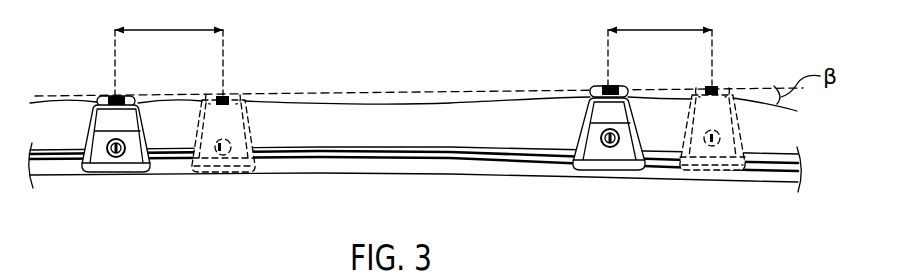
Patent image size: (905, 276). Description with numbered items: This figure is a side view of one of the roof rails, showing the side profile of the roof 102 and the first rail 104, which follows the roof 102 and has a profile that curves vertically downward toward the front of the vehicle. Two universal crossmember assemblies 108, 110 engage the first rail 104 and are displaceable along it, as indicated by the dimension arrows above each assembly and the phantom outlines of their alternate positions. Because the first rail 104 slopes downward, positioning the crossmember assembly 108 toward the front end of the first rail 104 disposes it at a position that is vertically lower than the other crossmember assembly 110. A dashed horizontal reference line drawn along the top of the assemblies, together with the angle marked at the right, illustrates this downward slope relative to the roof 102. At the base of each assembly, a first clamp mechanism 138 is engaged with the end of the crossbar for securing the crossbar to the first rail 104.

The roof 102 is at (52, 156).
The first rail 104 is at (358, 89).
The universal crossmember assembly 108 is at (586, 82).
The universal crossmember assembly 110 is at (100, 92).
The first clamp mechanism 138 is at (110, 174).